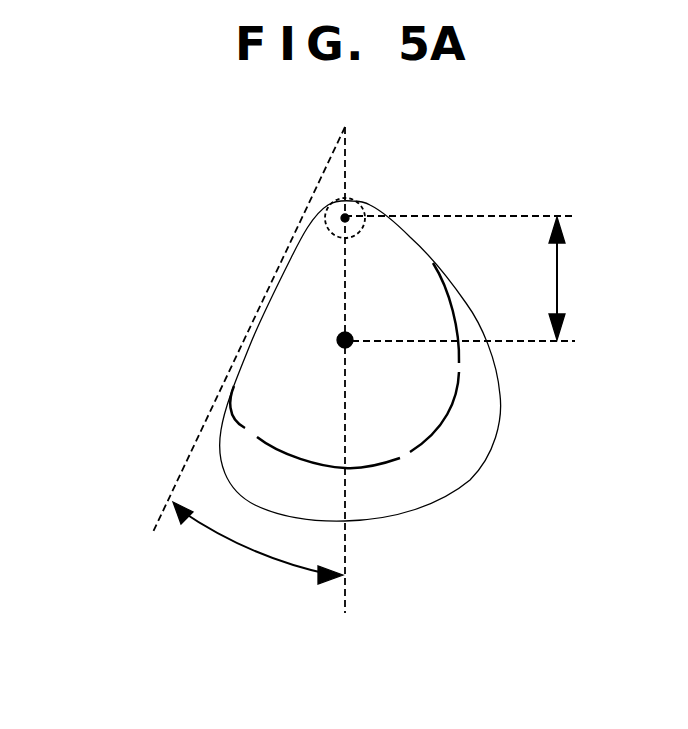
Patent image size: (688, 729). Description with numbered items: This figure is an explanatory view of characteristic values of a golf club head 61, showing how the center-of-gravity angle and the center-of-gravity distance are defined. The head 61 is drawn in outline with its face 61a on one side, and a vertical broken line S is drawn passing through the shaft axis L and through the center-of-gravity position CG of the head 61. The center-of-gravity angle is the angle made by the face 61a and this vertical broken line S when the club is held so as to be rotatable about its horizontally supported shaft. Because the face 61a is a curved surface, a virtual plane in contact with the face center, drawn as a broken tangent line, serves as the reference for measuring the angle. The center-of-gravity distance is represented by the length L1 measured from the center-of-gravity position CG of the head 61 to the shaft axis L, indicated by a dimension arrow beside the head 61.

The head 61 is at (131, 316).
The face 61a is at (256, 314).
The shaft axis L is at (345, 218).
The center-of-gravity position CG is at (349, 336).
The length L1 is at (478, 278).
The vertical broken line S is at (345, 585).